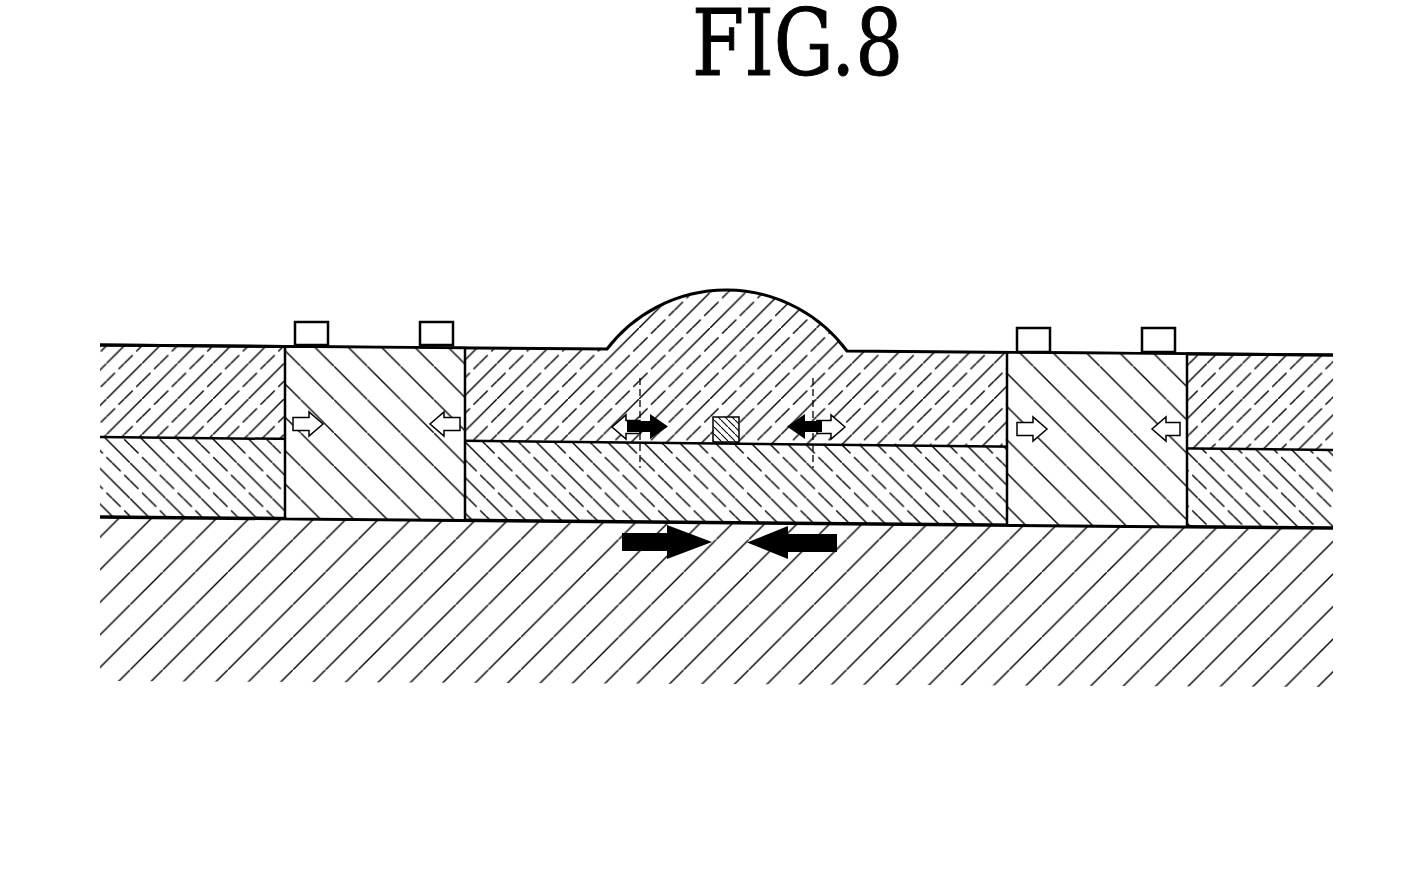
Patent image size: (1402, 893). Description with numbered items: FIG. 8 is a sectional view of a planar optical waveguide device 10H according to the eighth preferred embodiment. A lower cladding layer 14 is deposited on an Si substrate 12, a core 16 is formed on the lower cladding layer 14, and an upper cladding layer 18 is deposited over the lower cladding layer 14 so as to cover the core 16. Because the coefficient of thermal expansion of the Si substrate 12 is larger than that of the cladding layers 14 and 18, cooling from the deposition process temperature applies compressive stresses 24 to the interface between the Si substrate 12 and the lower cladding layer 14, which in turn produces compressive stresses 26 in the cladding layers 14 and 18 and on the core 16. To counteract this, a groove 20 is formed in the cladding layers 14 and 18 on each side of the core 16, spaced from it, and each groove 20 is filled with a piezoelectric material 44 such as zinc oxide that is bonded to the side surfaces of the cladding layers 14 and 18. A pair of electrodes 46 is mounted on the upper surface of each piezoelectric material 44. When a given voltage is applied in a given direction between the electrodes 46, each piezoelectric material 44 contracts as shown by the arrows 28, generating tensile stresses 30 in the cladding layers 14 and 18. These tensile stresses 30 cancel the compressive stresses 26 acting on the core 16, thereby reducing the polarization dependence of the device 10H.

The planar optical waveguide device 10H is at (928, 330).
The Si substrate 12 is at (997, 647).
The lower cladding layer 14 is at (1300, 488).
The core 16 is at (725, 415).
The upper cladding layer 18 is at (685, 370).
The groove 20 is at (291, 347).
The compressive stresses 24 is at (648, 552).
The compressive stresses 26 is at (657, 412).
The arrows 28 is at (310, 406).
The tensile stresses 30 is at (615, 411).
The piezoelectric material 44 is at (384, 357).
The electrodes 46 is at (311, 322).